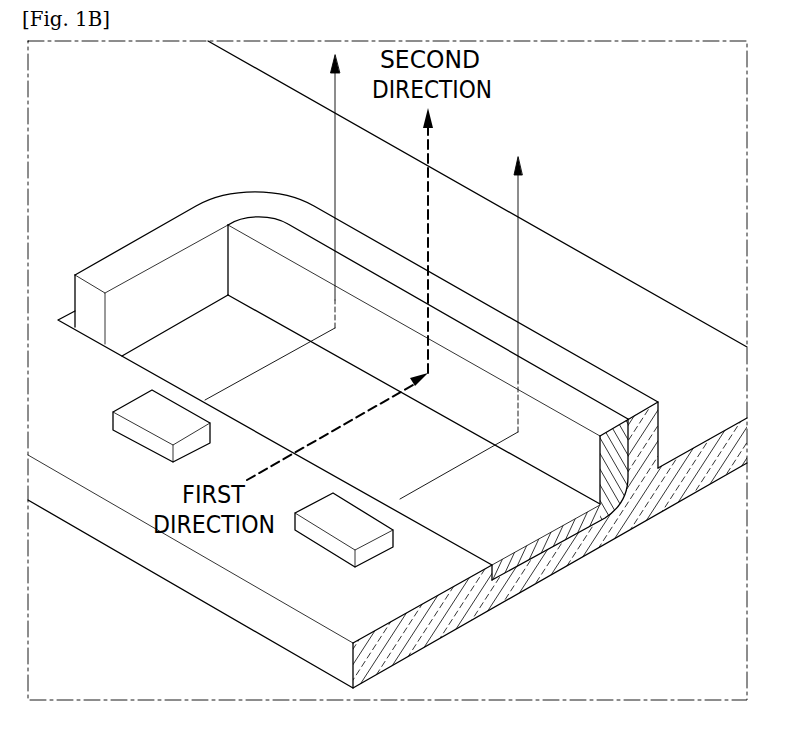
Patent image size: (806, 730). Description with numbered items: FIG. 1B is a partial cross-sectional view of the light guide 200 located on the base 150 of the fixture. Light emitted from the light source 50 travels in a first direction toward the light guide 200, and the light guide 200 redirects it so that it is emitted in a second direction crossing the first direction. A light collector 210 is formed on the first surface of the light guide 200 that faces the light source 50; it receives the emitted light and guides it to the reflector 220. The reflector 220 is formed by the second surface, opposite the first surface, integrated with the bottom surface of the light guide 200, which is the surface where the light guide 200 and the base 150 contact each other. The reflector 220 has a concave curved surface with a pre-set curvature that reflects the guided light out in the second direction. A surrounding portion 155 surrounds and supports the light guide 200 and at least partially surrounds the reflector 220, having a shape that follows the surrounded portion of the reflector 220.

The light source 50 is at (320, 538).
The base 150 is at (663, 332).
The surrounding portion 155 is at (140, 212).
The light guide 200 is at (562, 390).
The light collector 210 is at (468, 388).
The reflector 220 is at (626, 492).